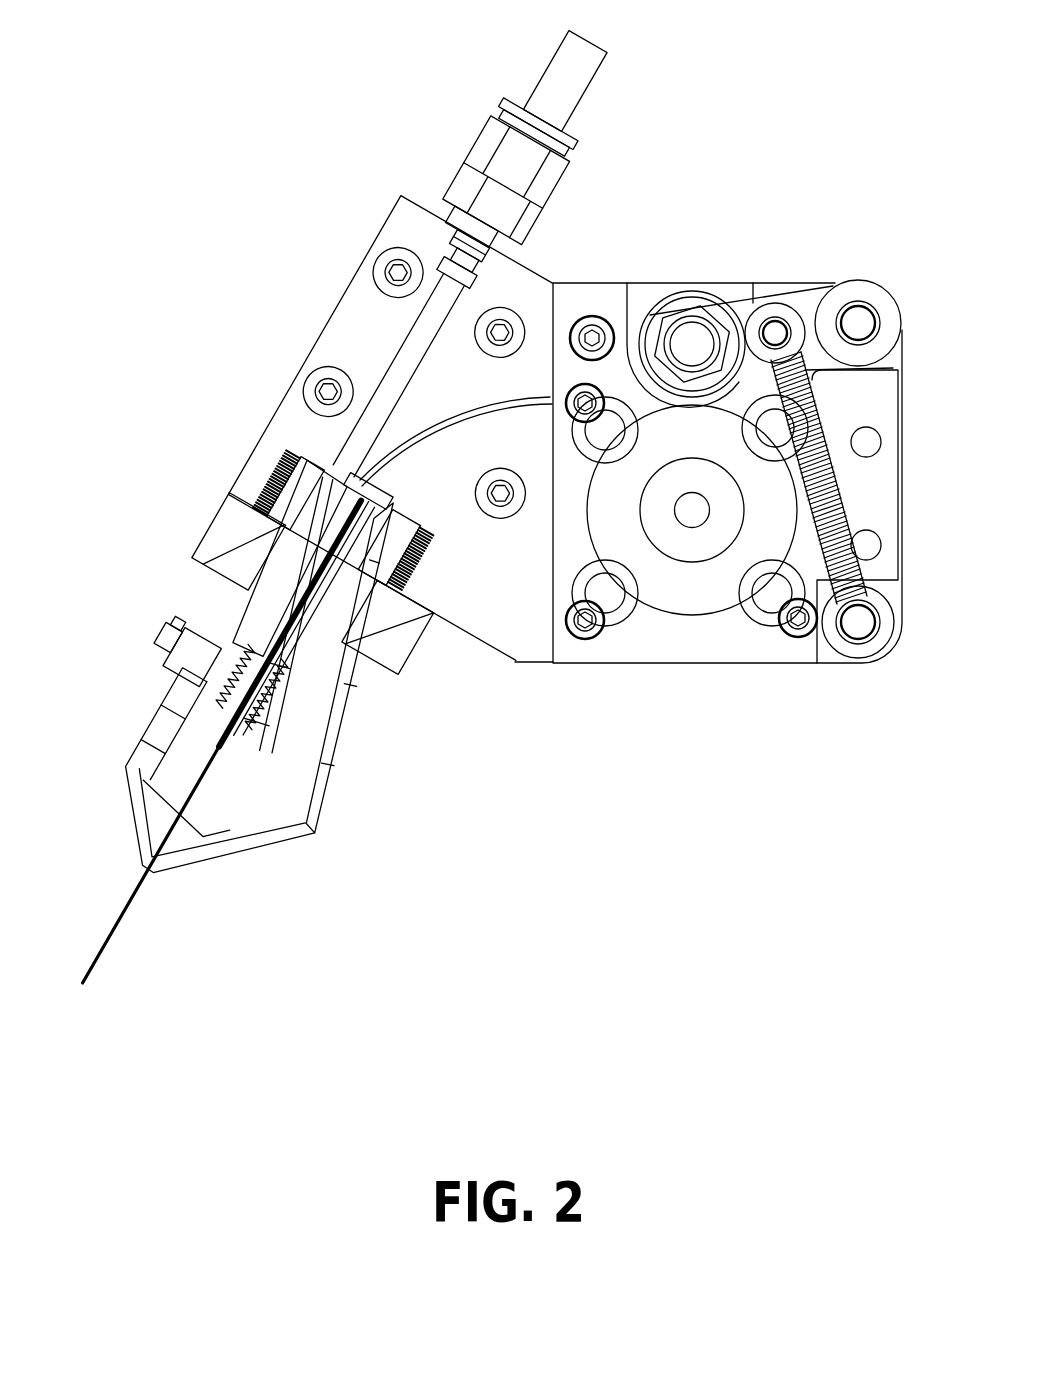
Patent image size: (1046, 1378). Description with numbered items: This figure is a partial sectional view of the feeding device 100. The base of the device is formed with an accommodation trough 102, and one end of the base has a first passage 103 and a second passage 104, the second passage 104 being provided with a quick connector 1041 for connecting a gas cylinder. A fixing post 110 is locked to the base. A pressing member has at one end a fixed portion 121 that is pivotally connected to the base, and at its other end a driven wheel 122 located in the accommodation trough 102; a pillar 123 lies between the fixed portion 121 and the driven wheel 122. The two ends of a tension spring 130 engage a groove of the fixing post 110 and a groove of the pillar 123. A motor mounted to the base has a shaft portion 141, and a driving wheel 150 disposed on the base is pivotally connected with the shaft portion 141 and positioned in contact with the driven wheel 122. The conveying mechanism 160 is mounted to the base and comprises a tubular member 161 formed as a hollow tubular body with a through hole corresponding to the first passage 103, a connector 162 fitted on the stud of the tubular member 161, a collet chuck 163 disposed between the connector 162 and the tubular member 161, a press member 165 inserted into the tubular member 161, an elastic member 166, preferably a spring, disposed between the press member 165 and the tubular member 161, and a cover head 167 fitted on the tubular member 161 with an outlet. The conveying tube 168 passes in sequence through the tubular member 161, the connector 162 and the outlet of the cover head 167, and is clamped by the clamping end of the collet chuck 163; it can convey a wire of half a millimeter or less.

The feeding device 100 is at (607, 200).
The accommodation trough 102 is at (652, 297).
The first passage 103 is at (456, 423).
The second passage 104 is at (415, 345).
The quick connector 1041 is at (486, 148).
The fixing post 110 is at (858, 632).
The fixed portion 121 is at (860, 318).
The driven wheel 122 is at (684, 292).
The pillar 123 is at (770, 330).
The tension spring 130 is at (876, 500).
The shaft portion 141 is at (700, 522).
The driving wheel 150 is at (650, 602).
The conveying mechanism 160 is at (148, 689).
The tubular member 161 is at (247, 618).
The connector 162 is at (218, 836).
The collet chuck 163 is at (205, 762).
The press member 165 is at (343, 664).
The elastic member 166 is at (268, 714).
The cover head 167 is at (278, 778).
The conveying tube 168 is at (146, 906).